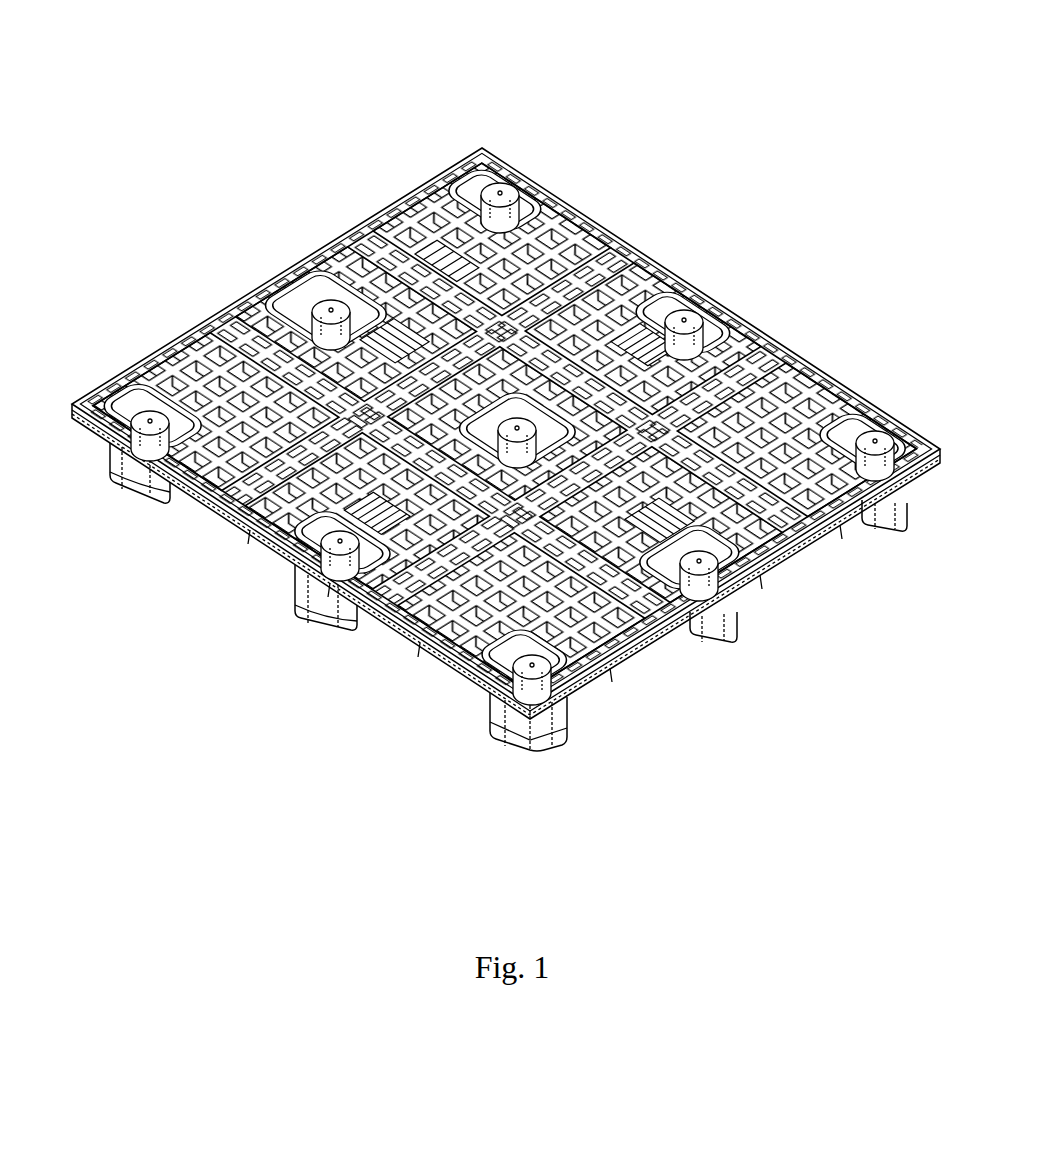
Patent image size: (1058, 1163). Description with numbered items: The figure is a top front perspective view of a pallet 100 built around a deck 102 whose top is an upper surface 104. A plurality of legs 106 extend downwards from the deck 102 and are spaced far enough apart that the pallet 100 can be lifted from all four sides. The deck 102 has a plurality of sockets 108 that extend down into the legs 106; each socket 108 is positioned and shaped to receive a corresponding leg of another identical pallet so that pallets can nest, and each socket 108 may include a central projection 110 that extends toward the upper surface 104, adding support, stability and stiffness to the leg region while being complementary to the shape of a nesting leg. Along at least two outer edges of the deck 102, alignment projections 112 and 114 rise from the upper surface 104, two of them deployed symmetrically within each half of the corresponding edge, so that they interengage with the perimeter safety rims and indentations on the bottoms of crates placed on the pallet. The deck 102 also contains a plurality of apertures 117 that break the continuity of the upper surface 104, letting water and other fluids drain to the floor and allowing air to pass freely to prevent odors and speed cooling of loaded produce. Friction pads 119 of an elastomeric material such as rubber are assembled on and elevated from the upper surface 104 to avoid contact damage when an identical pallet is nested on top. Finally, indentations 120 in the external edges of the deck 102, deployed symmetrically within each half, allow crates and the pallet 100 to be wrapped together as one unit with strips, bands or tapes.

The pallet 100 is at (747, 104).
The deck 102 is at (252, 559).
The upper surface 104 is at (758, 335).
The legs 106 is at (165, 502).
The sockets 108 is at (467, 193).
The central projection 110 is at (500, 193).
The alignment projection 112 is at (520, 158).
The alignment projection 114 is at (322, 246).
The apertures 117 is at (477, 258).
The friction pads 119 is at (573, 228).
The indentations 120 is at (163, 350).